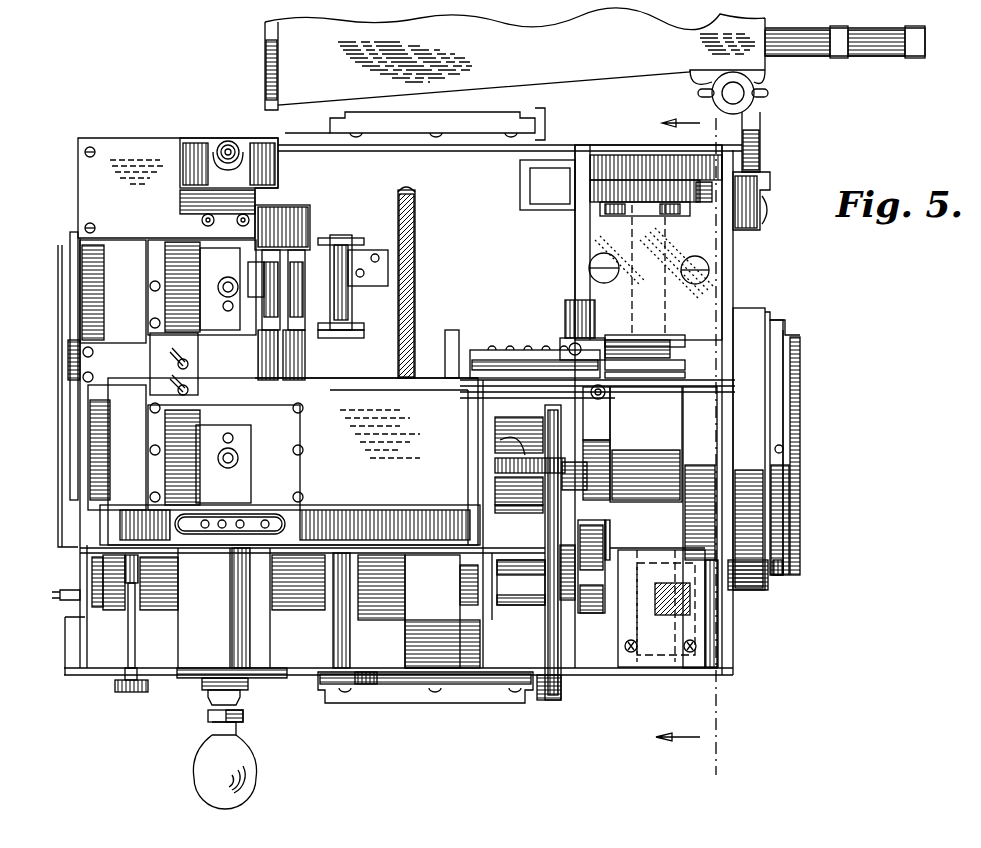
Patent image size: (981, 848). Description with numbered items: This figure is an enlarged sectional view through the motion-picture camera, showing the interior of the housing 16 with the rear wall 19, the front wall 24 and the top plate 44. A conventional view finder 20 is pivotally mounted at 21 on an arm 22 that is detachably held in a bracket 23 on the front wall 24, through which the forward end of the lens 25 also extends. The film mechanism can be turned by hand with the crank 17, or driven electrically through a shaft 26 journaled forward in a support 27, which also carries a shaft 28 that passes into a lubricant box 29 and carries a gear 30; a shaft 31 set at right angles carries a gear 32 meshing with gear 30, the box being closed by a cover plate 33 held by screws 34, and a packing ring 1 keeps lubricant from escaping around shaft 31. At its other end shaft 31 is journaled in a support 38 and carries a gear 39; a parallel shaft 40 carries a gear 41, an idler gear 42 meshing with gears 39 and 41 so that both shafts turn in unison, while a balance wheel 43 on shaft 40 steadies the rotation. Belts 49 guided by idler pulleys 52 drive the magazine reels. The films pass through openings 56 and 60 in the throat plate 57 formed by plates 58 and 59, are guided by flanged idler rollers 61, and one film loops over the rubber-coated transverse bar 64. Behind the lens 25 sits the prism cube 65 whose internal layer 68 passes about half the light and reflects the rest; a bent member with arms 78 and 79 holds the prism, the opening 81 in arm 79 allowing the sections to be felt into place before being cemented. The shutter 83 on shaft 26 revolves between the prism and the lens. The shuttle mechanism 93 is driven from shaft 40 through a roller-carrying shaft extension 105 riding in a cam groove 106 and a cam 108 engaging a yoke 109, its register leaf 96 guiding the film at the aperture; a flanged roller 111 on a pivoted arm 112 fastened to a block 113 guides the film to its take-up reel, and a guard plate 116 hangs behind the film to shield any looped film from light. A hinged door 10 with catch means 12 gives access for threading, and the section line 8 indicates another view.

The packing ring 1 is at (632, 545).
The section line 8- 8 is at (686, 438).
The door 10 is at (296, 150).
The catch means 12 is at (226, 143).
The housing 16 is at (76, 175).
The crank 17 is at (216, 698).
The rear wall 19 is at (80, 513).
The view finder 20 is at (595, 59).
The pivotal mounting 21 is at (740, 91).
The arm 22 is at (757, 127).
The bracket 23 is at (758, 225).
The front wall 24 is at (735, 292).
The lens 25 is at (825, 385).
The shaft 26 is at (516, 552).
The support 27 is at (596, 530).
The shaft 28 is at (625, 612).
The box 29 is at (698, 636).
The gear 30 is at (640, 622).
The shaft 31 is at (676, 235).
The gear 32 is at (768, 600).
The cover plate 33 is at (690, 628).
The screws 34 is at (690, 652).
The support 38 is at (590, 284).
The gear 39 is at (709, 193).
The shaft 40 is at (630, 232).
The gear 41 is at (636, 185).
The idler gear 42 is at (590, 190).
The fly or balance wheel 43 is at (598, 165).
The top plate 44 is at (174, 128).
The belt connection 49 is at (240, 214).
The idler pulleys 52 is at (275, 516).
The openings 56 is at (260, 280).
The throat plate 57 is at (272, 432).
The plate 58 is at (148, 258).
The plate 59 is at (225, 381).
The openings 60 is at (200, 297).
The flanged idler rollers 61 is at (290, 333).
The bar 64 is at (416, 236).
The prism set or cube 65 is at (508, 452).
The layer 68 is at (510, 468).
The arm 78 is at (500, 510).
The arm 79 is at (500, 496).
The opening 81 is at (502, 444).
The shutter 83 is at (556, 532).
The shuttle mechanism 93 is at (528, 348).
The register leaf 96 is at (565, 390).
The roller-carrying shaft extension 105 is at (598, 340).
The cam groove 106 is at (665, 350).
The cam 108 is at (668, 366).
The yoke 109 is at (670, 376).
The flanged roller 111 is at (346, 330).
The arm 112 is at (334, 240).
The block 113 is at (376, 250).
The guard plate 116 is at (492, 350).